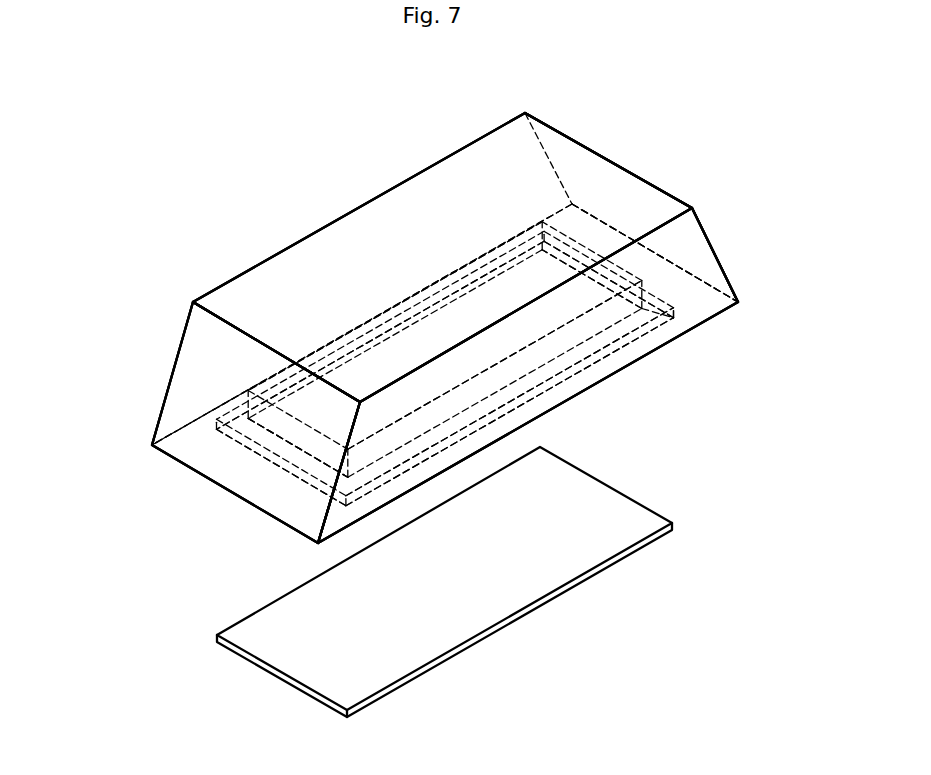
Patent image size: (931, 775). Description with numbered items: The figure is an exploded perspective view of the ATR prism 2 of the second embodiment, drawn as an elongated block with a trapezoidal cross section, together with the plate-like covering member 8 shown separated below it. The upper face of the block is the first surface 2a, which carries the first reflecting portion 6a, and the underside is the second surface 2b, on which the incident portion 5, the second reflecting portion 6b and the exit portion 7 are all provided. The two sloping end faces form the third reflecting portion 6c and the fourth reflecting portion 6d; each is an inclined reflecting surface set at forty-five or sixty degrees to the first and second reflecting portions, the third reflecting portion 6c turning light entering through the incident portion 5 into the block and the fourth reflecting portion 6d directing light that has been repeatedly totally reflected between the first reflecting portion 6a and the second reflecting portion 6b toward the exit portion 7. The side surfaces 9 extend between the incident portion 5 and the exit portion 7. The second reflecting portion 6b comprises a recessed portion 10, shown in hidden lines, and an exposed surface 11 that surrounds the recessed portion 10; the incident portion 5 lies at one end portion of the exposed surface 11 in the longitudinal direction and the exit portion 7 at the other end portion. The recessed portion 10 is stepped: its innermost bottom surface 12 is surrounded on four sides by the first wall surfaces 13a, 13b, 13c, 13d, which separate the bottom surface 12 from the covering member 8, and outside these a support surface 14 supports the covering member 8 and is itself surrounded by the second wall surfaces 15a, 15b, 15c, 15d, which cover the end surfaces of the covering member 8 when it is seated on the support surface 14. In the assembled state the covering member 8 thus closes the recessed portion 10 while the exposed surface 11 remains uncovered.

The ATR prism 2 is at (758, 157).
The first surface 2a is at (482, 165).
The second surface 2b is at (662, 352).
The incident portion 5 is at (243, 468).
The first reflecting portion 6a is at (375, 232).
The second reflecting portion 6b is at (528, 342).
The third reflecting portion 6c is at (190, 385).
The fourth reflecting portion 6d is at (711, 237).
The exit portion 7 is at (647, 268).
The covering member 8 is at (623, 560).
The side surfaces 9 is at (183, 344).
The recessed portion 10 is at (296, 482).
The exposed surface 11 is at (188, 446).
The bottom surface 12 is at (466, 308).
The first wall surface 13a is at (308, 466).
The first wall surface 13b is at (606, 330).
The first wall surface 13c is at (503, 410).
The first wall surface 13d is at (336, 335).
The support surface 14 is at (245, 428).
The second wall surface 15a is at (280, 462).
The second wall surface 15b is at (574, 256).
The second wall surface 15c is at (440, 468).
The second wall surface 15d is at (250, 420).